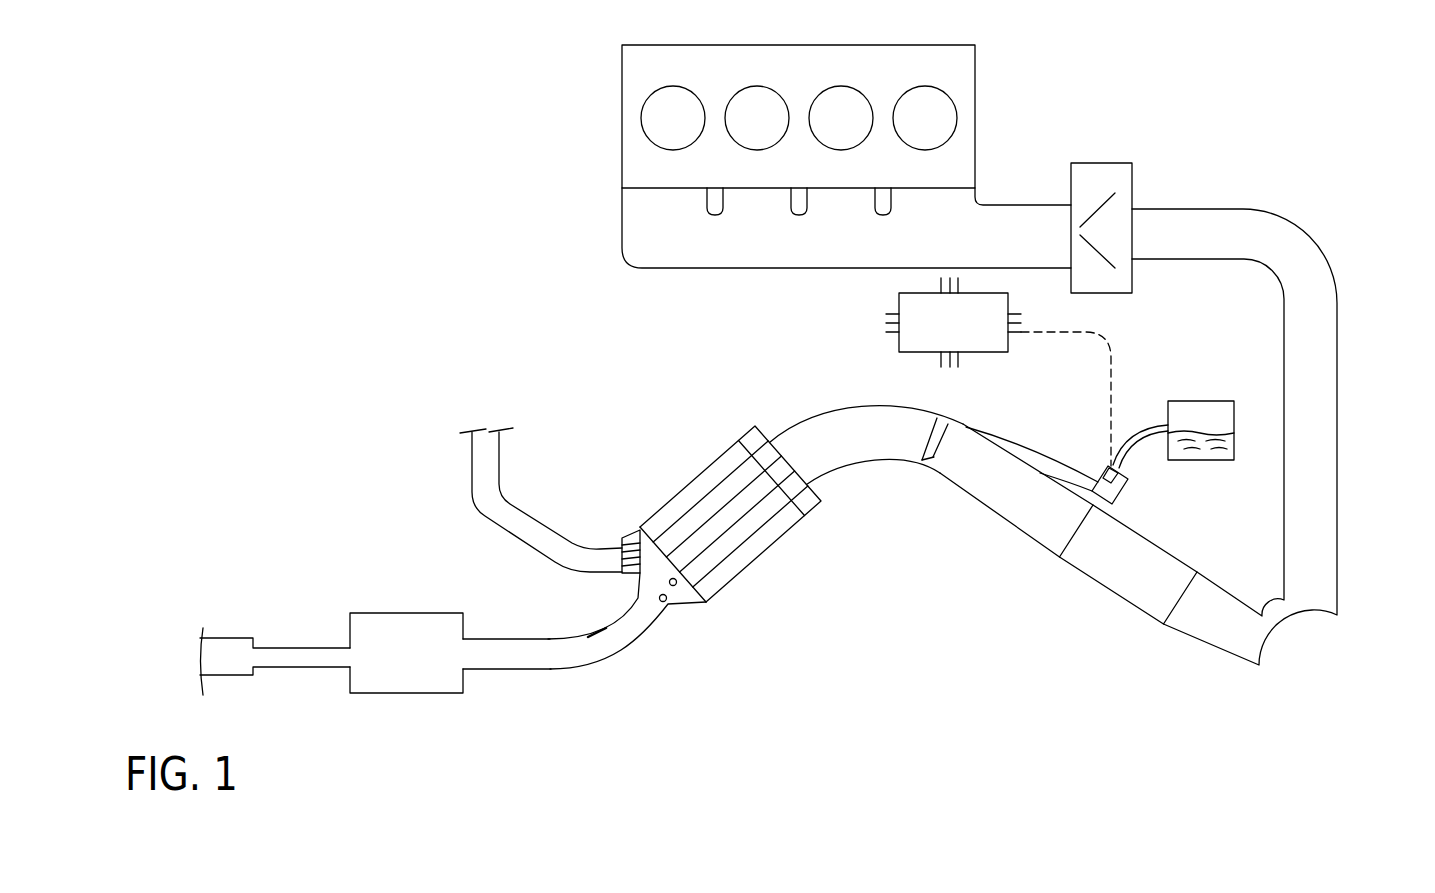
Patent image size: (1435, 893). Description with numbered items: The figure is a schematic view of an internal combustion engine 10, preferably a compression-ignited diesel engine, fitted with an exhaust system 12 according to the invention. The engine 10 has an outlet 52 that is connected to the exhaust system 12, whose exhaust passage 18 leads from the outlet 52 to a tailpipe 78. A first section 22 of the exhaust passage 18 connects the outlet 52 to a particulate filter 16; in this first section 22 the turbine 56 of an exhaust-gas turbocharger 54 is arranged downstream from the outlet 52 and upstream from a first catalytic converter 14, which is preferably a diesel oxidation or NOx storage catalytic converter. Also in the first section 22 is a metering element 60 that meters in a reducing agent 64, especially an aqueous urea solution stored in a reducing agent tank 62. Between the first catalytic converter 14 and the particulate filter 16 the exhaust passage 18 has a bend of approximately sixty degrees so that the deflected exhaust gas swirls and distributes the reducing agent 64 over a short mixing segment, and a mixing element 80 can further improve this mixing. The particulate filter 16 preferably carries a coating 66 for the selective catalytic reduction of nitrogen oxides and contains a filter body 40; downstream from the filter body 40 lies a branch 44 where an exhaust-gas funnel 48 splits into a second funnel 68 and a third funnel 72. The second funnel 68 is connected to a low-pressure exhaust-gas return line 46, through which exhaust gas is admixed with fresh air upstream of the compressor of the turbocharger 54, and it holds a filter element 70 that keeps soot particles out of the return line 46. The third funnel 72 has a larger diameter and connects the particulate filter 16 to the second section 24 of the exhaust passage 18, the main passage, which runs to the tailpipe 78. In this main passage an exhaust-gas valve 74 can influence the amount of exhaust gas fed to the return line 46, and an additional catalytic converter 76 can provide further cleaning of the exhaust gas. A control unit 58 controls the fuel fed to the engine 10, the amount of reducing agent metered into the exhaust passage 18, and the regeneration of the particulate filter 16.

The internal combustion engine 10 is at (962, 62).
The exhaust system 12 is at (1345, 172).
The first catalytic converter 14 is at (1130, 585).
The particulate filter 16 is at (719, 470).
The exhaust passage 18 is at (1318, 395).
The first section of the exhaust passage 22 is at (873, 448).
The second section of the exhaust passage 24 is at (518, 660).
The filter body 40 is at (787, 512).
The branch 44 is at (627, 647).
The low-pressure exhaust-gas return line 46 is at (482, 452).
The exhaust-gas funnel 48 is at (673, 582).
The outlet 52 is at (681, 200).
The exhaust-gas turbocharger 54 is at (1131, 173).
The turbine 56 is at (1093, 186).
The control unit 58 is at (929, 322).
The metering element 60 is at (1104, 490).
The reducing agent tank 62 is at (1212, 401).
The reducing agent 64 is at (1203, 448).
The coating 66 is at (692, 512).
The second funnel 68 is at (648, 545).
The filter element 70 is at (630, 553).
The third funnel 72 is at (663, 598).
The exhaust-gas valve 74 is at (580, 645).
The additional catalytic converter 76 is at (406, 628).
The tailpipe 78 is at (237, 638).
The mixing element 80 is at (933, 460).